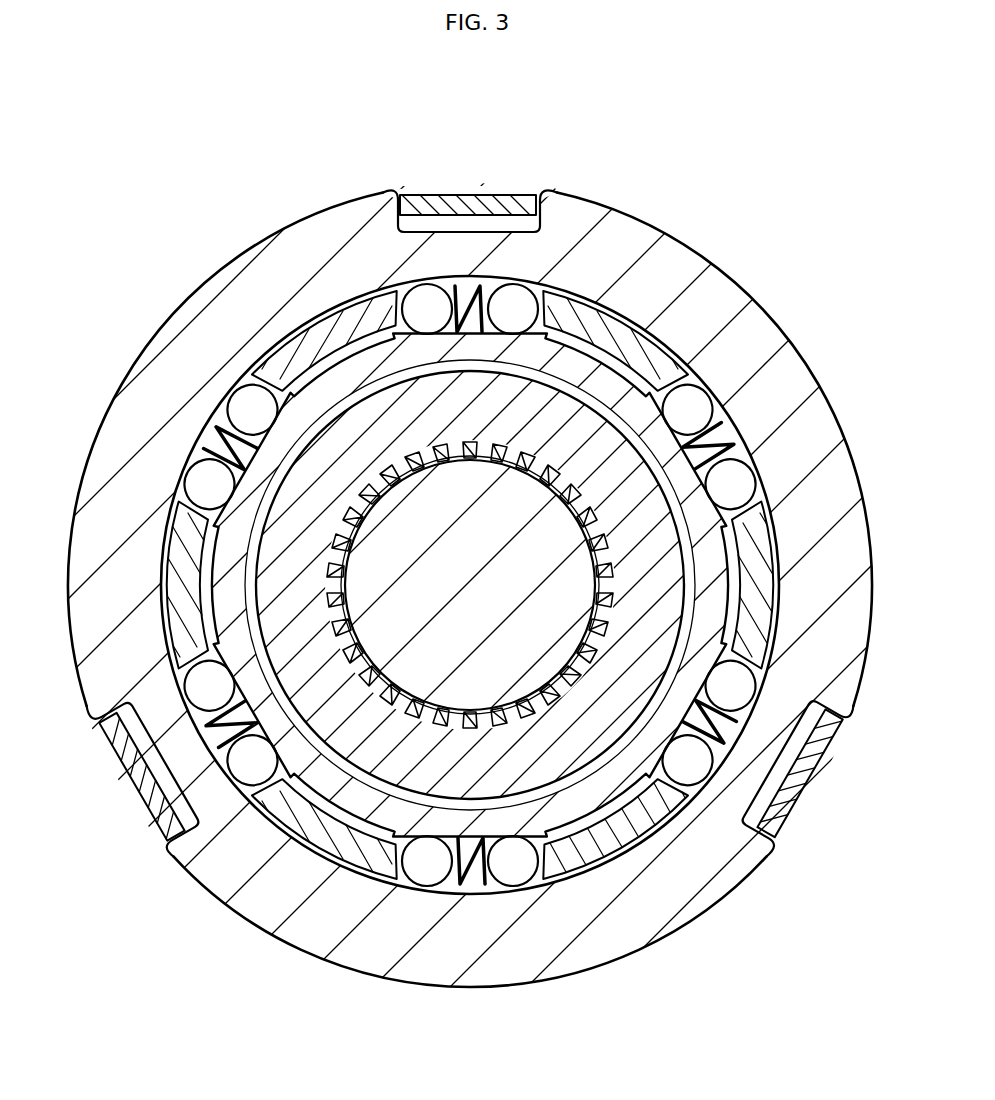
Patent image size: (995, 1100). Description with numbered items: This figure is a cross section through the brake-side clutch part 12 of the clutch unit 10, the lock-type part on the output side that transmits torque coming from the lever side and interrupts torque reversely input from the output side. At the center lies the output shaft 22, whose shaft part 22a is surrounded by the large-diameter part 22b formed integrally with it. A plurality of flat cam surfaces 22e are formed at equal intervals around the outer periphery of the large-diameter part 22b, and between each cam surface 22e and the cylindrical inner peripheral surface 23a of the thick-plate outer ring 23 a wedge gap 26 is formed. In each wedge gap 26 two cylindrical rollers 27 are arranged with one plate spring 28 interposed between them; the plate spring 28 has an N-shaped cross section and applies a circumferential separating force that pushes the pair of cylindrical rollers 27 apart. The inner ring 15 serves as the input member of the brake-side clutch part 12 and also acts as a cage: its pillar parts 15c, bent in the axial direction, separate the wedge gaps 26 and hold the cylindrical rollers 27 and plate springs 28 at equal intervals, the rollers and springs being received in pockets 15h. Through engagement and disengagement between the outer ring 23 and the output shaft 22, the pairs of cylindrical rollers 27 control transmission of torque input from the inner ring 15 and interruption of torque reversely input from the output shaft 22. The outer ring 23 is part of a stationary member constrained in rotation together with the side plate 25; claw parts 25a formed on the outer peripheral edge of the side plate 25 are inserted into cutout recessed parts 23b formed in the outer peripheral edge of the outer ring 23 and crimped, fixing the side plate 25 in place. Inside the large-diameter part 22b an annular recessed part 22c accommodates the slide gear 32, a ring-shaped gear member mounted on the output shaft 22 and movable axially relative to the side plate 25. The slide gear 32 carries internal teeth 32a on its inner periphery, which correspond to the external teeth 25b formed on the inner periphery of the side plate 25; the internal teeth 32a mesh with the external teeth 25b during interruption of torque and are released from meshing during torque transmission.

The clutch unit 10 is at (782, 226).
The brake-side clutch part 12 is at (200, 290).
The inner ring 15 is at (605, 305).
The pillar parts 15c is at (318, 330).
The pockets 15h is at (623, 783).
The output shaft 22 is at (240, 645).
The shaft part 22a is at (508, 665).
The large-diameter part 22b is at (565, 778).
The annular recessed part 22c is at (325, 600).
The cam surfaces 22e is at (245, 445).
The outer ring 23 is at (692, 243).
The cylindrical inner peripheral surface 23a is at (172, 568).
The cutout recessed parts 23b is at (540, 230).
The side plate 25 is at (395, 715).
The claw parts 25a is at (445, 205).
The teeth part (external teeth) 25b is at (455, 462).
The wedge gaps 26 is at (720, 432).
The cylindrical rollers 27 is at (420, 292).
The plate springs 28 is at (468, 295).
The slide gear 32 is at (672, 556).
The teeth part (internal teeth) 32a is at (540, 482).